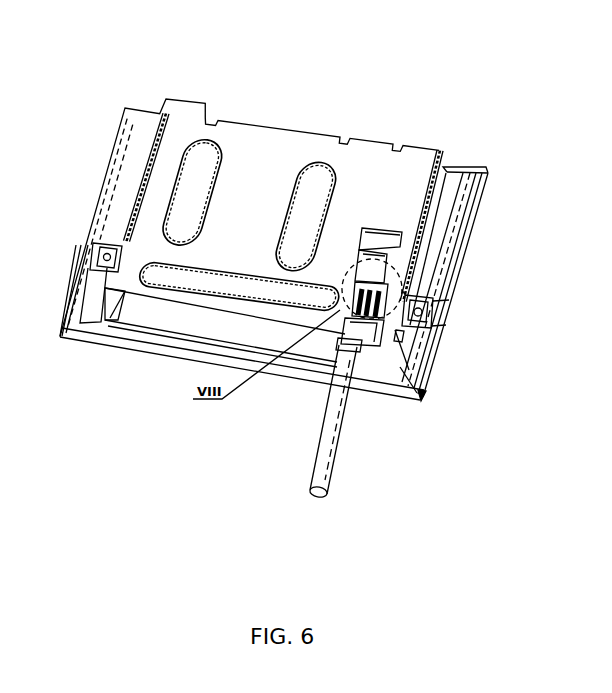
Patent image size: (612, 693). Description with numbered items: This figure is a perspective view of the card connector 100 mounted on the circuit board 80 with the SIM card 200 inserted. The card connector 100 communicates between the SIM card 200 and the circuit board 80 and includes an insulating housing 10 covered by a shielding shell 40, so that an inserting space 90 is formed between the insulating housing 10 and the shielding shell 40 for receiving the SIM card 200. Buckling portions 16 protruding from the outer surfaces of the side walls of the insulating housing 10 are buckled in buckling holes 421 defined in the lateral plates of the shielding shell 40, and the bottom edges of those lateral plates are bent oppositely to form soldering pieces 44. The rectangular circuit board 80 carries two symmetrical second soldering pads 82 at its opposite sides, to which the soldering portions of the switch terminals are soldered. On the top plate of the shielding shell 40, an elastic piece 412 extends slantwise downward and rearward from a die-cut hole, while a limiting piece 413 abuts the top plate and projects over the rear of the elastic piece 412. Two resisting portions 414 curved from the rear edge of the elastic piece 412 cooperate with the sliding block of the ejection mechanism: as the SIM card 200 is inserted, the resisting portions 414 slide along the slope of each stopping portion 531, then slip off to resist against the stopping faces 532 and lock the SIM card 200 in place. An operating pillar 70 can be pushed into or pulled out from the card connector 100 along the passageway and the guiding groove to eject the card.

The card connector 100 is at (292, 72).
The shielding shell 40 is at (423, 163).
The buckling holes 421 is at (447, 173).
The buckling portions 16 is at (442, 187).
The circuit board 80 is at (455, 240).
The stopping portion 531 is at (427, 288).
The limiting piece 413 is at (386, 262).
The stopping face 532 is at (413, 298).
The soldering pieces 44 is at (98, 258).
The second soldering pads 82 is at (103, 247).
The resisting portions 414 is at (423, 396).
The elastic piece 412 is at (372, 324).
The insulating housing 10 is at (362, 348).
The inserting space 90 is at (343, 358).
The operating pillar 70 is at (332, 436).
The SIM card 200 is at (194, 316).